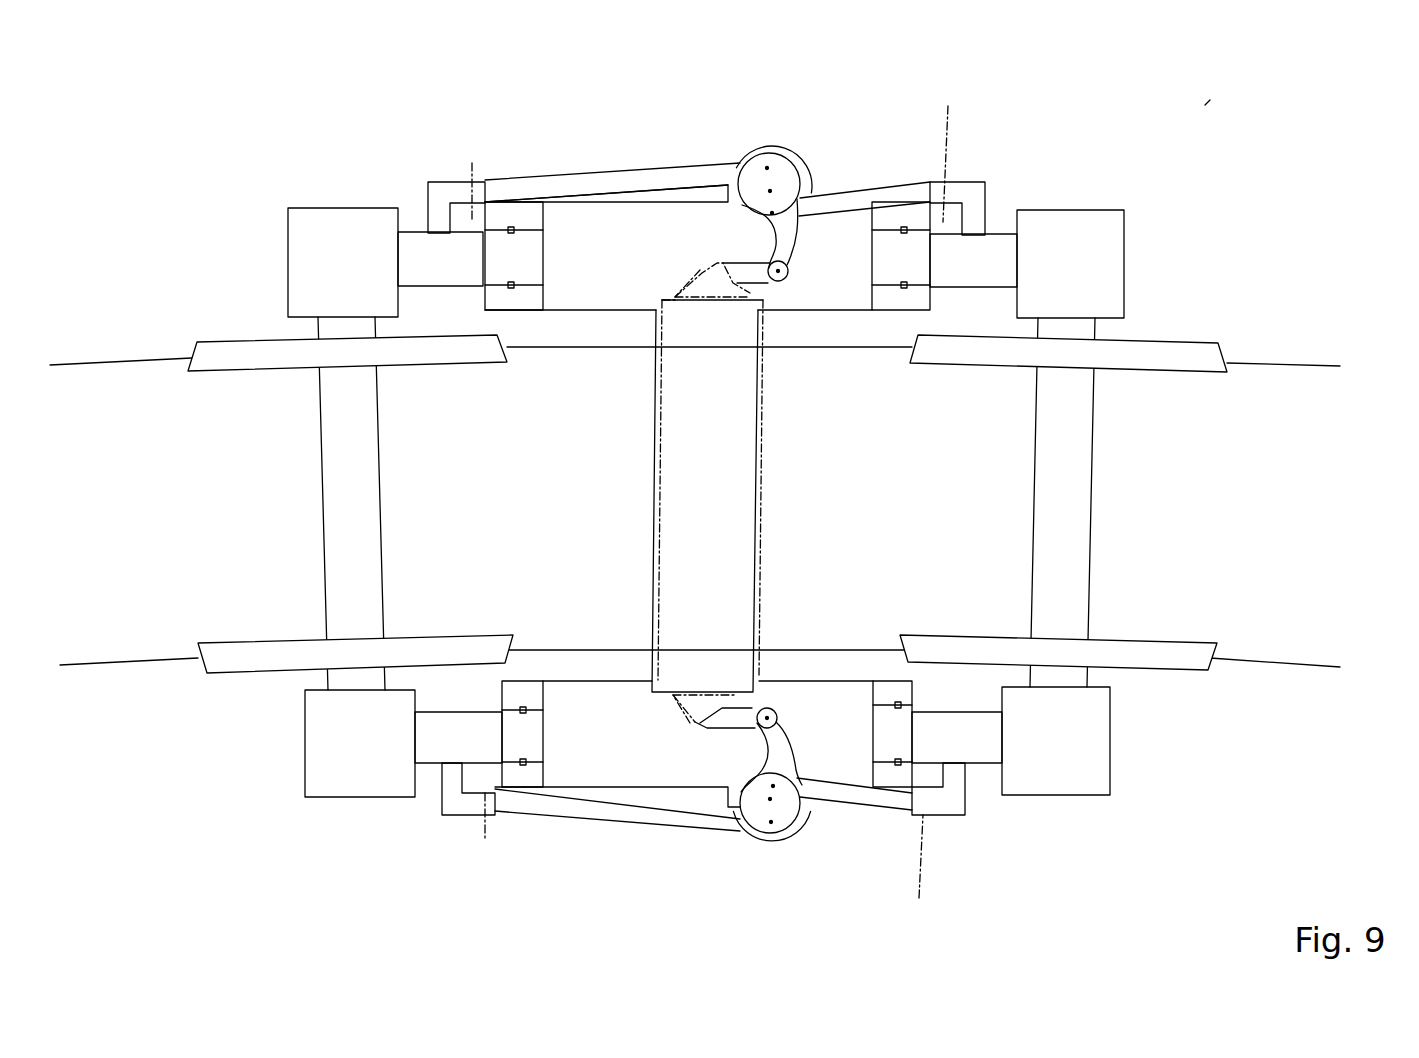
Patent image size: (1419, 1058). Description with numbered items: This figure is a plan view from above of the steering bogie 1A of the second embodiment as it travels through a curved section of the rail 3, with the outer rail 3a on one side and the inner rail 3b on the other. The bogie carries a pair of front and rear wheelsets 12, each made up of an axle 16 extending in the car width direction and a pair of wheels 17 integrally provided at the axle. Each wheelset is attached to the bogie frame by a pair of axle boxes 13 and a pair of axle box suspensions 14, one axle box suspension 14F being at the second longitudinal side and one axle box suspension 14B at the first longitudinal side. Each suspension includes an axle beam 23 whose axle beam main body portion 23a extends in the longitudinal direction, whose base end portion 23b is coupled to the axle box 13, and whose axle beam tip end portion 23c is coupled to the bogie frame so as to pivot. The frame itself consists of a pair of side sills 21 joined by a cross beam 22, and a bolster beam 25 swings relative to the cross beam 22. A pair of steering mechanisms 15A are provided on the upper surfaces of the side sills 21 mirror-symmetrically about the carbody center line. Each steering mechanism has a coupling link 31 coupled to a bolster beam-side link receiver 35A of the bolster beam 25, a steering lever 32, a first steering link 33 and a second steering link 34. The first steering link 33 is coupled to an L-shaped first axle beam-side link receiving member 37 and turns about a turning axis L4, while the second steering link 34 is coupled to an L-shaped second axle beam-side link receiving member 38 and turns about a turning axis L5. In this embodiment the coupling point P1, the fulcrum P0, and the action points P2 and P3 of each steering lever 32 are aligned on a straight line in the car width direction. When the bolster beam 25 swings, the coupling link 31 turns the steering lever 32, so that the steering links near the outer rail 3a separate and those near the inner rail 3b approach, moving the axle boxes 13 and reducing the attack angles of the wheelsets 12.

The steering bogie 1A is at (1208, 103).
The rail 3 is at (695, 511).
The outer rail 3a is at (1278, 363).
The inner rail 3b is at (1285, 668).
The wheelset 12 is at (250, 285).
The axle box 13 is at (303, 218).
The axle box suspension 14 is at (737, 501).
The axle box suspension 14F is at (415, 216).
The axle box suspension 14B is at (1000, 216).
The steering mechanism 15A is at (793, 160).
The axle 16 is at (325, 497).
The wheel 17 is at (205, 352).
The side sill 21 is at (618, 788).
The cross beam 22 is at (760, 400).
The axle beam 23 is at (705, 494).
The axle beam main body portion 23a is at (456, 287).
The base end portion 23b is at (440, 287).
The axle beam tip end portion 23c is at (516, 272).
The bolster beam 25 is at (672, 297).
The coupling link 31 is at (748, 297).
The steering lever 32 is at (745, 218).
The first steering link 33 is at (905, 195).
The second steering link 34 is at (567, 188).
The bolster beam-side link receiver 35A is at (700, 270).
The first axle beam-side link receiving member 37 is at (963, 195).
The second axle beam-side link receiving member 38 is at (452, 195).
The turning axis L4 is at (934, 501).
The turning axis L5 is at (480, 174).
The fulcrum P0 is at (770, 191).
The coupling point P1 is at (790, 278).
The action point P2 is at (772, 213).
The action point P3 is at (767, 168).